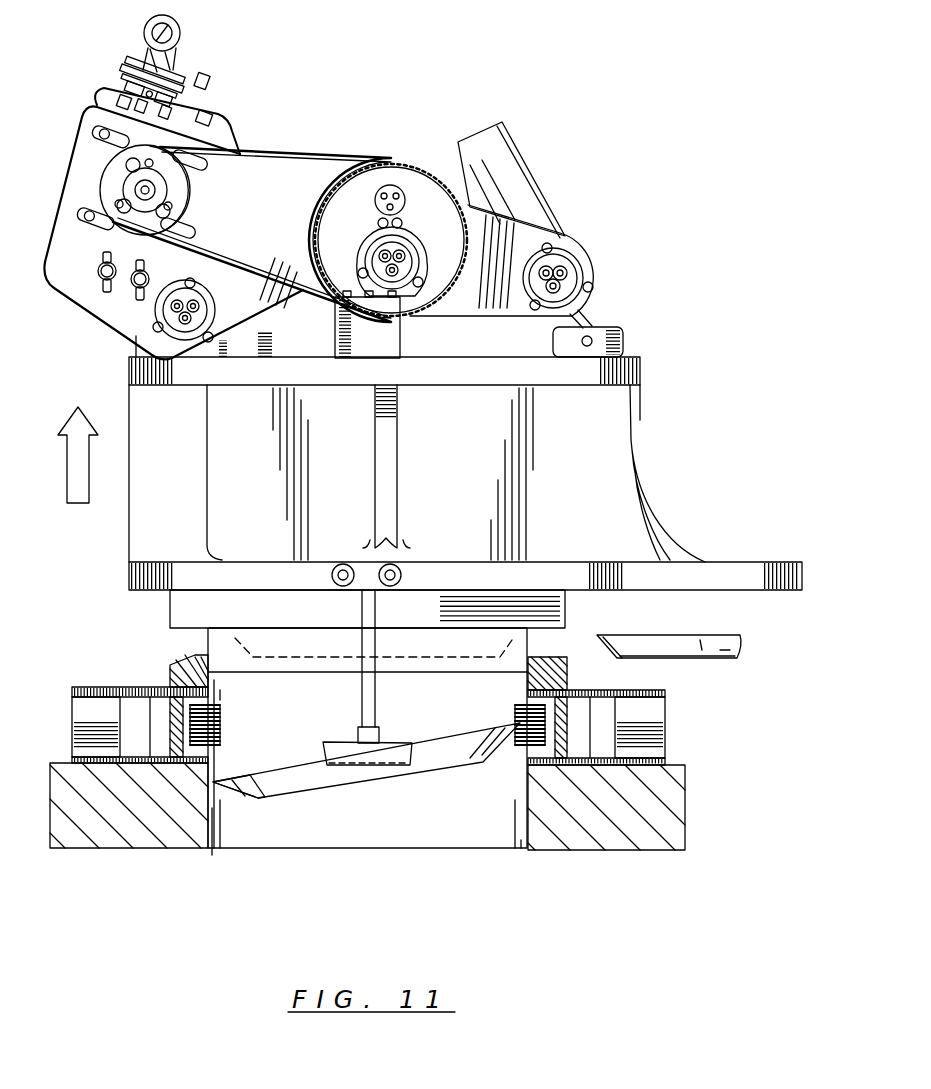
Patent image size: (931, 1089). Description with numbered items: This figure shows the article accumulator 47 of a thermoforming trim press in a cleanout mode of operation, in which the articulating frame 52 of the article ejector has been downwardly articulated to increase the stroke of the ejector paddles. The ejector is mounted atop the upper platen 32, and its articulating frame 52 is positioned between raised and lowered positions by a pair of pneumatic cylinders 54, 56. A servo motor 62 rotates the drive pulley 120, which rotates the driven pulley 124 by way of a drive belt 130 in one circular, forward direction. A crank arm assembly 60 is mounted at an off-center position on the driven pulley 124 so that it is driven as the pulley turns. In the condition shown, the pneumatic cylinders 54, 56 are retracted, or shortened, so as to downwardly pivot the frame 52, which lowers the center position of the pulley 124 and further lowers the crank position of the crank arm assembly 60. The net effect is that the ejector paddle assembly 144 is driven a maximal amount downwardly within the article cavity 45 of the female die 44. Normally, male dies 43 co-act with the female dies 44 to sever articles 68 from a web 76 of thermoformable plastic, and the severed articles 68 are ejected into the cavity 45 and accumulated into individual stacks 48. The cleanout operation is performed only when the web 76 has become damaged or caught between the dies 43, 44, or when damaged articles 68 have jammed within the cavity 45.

The servo motor 62 is at (200, 48).
The drive belt 130 is at (283, 158).
The articulating frame 52 is at (470, 207).
The pneumatic cylinder 56 is at (529, 180).
The pneumatic cylinder 54 is at (513, 145).
The driven pulley 124 is at (331, 207).
The drive pulley 120 is at (178, 198).
The crank arm assembly 60 is at (355, 275).
The upper platen 32 is at (448, 372).
The web 76 is at (348, 775).
The article 68 is at (700, 656).
The female die 44 is at (566, 667).
The male die 43 is at (484, 665).
The ejector paddle assembly 144 is at (330, 722).
The stack 48 is at (340, 808).
The article cavity 45 is at (212, 855).
The article accumulator 47 is at (565, 872).